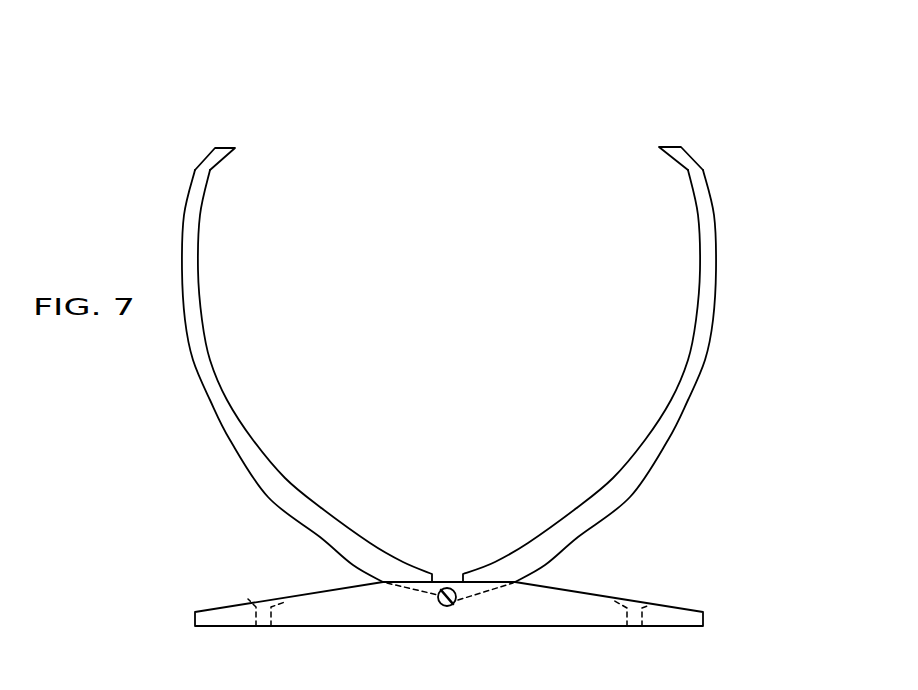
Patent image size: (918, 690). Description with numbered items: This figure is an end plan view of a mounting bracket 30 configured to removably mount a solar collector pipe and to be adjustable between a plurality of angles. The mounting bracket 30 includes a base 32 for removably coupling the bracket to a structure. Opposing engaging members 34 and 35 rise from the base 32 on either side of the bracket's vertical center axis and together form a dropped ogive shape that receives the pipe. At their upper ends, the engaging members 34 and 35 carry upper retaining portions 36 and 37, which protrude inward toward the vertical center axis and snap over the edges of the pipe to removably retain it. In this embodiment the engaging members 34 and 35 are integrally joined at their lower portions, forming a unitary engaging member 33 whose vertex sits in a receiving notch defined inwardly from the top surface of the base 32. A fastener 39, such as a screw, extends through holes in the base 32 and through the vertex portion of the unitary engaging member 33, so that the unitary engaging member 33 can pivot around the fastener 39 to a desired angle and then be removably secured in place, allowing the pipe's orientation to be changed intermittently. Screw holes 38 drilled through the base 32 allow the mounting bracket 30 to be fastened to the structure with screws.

The mounting bracket 30 is at (557, 85).
The base 32 is at (513, 620).
The unitary engaging member 33 is at (459, 217).
The engaging member 34 is at (207, 360).
The engaging member 35 is at (692, 360).
The upper retaining portion 36 is at (213, 158).
The upper retaining portion 37 is at (683, 158).
The screw holes 38 is at (262, 603).
The fastener 39 is at (438, 597).